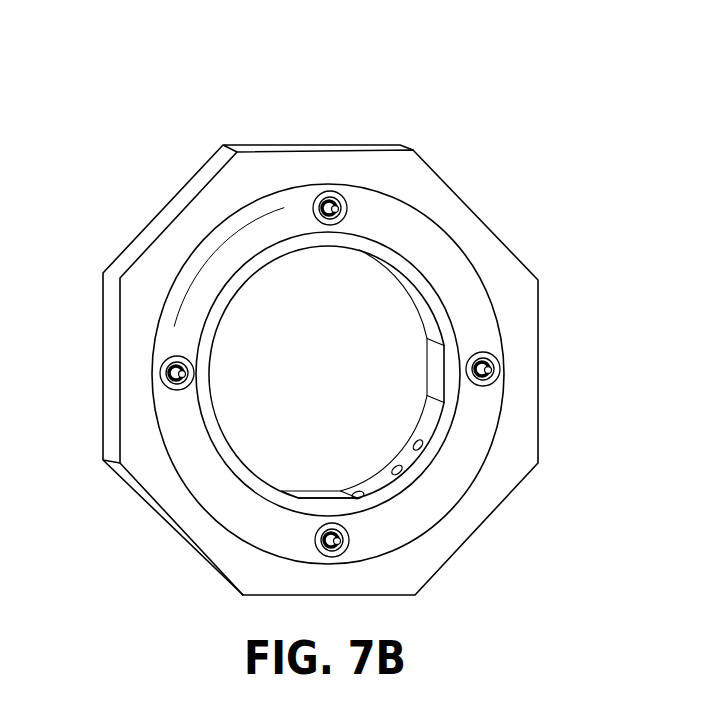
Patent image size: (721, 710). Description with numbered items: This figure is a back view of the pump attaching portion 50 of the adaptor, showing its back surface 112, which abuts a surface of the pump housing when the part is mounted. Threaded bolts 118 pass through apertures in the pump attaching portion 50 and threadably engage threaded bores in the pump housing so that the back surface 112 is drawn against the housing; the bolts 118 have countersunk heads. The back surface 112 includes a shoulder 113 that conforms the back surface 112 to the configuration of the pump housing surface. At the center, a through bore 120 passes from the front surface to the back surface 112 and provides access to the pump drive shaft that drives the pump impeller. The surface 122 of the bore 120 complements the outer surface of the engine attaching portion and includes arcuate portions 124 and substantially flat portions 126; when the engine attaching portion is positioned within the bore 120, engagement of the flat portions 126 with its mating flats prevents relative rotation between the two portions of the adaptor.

The pump attaching portion 50 is at (372, 93).
The back surface 112 is at (503, 280).
The shoulder 113 is at (410, 237).
The threaded bolts 118 is at (500, 370).
The through bore 120 is at (272, 368).
The surface of bore 122 is at (355, 495).
The arcuate portions 124 is at (322, 250).
The substantially flat portions 126 is at (390, 480).